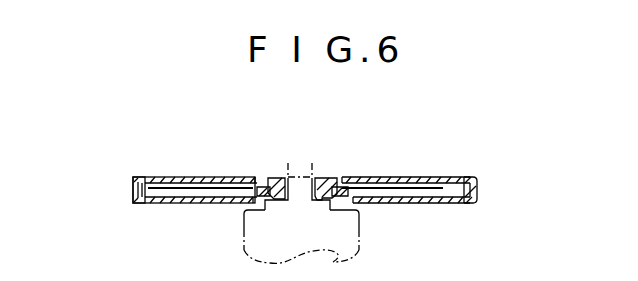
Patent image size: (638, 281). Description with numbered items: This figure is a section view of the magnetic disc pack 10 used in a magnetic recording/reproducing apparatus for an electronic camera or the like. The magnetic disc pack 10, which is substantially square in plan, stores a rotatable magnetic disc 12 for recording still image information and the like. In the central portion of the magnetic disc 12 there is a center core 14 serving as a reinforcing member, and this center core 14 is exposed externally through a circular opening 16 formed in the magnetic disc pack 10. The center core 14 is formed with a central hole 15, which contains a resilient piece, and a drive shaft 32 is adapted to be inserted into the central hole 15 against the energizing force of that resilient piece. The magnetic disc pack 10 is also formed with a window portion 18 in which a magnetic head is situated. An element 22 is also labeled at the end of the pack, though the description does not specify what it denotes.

The magnetic disc pack 10 is at (180, 159).
The magnetic disc 12 is at (216, 176).
The center core 14 is at (266, 177).
The central hole 15 is at (288, 176).
The circular opening 16 is at (338, 177).
The window portion 18 is at (436, 205).
The end cap 22 is at (134, 192).
The drive shaft 32 is at (310, 176).